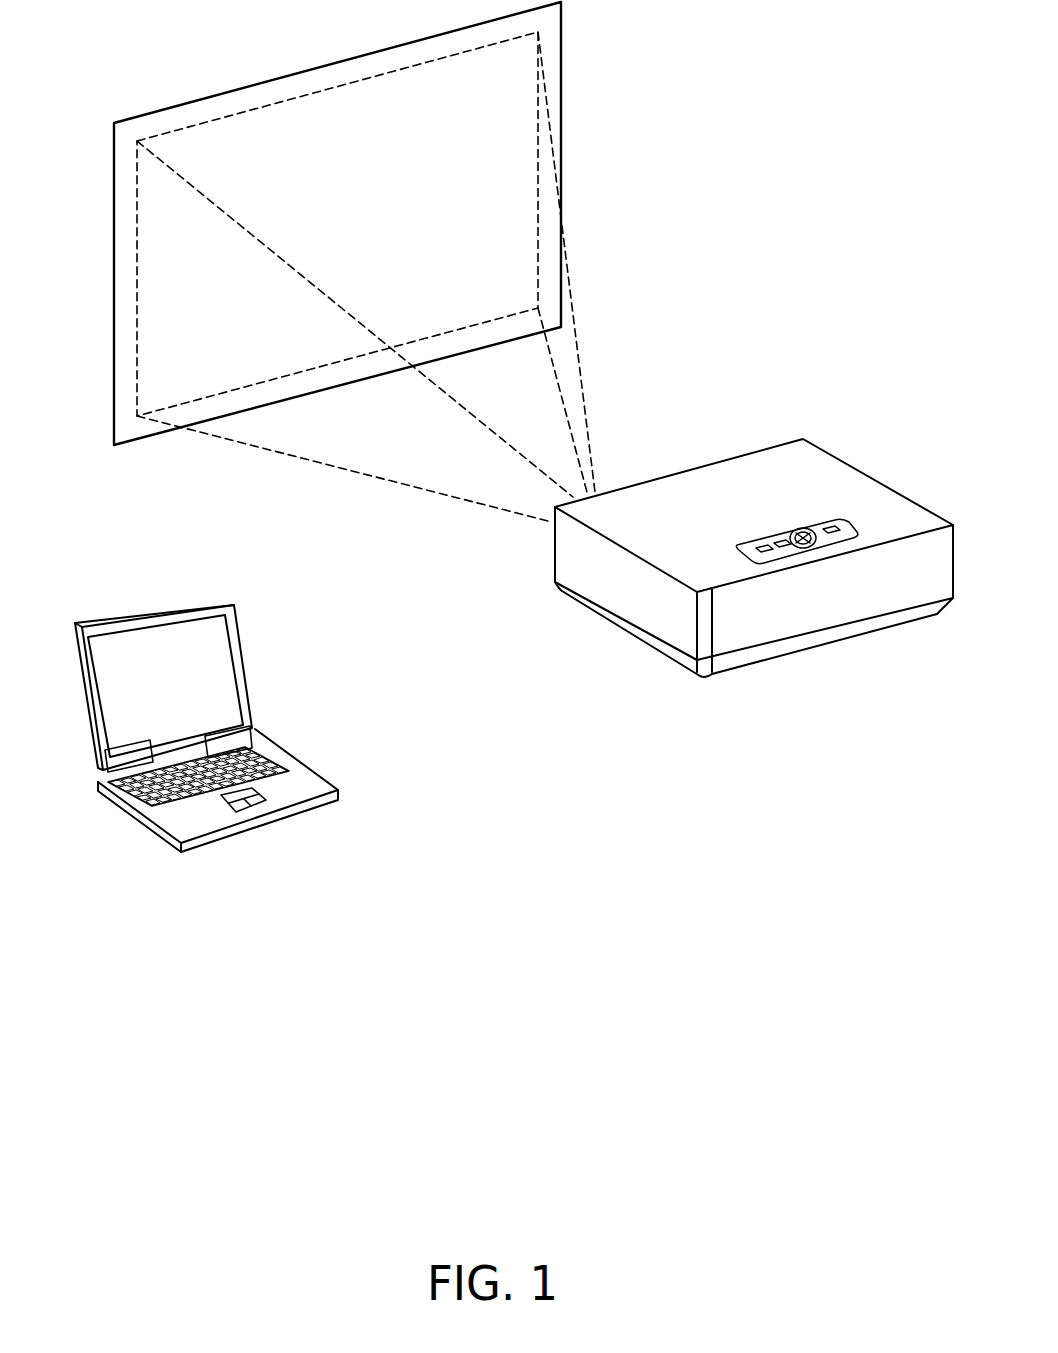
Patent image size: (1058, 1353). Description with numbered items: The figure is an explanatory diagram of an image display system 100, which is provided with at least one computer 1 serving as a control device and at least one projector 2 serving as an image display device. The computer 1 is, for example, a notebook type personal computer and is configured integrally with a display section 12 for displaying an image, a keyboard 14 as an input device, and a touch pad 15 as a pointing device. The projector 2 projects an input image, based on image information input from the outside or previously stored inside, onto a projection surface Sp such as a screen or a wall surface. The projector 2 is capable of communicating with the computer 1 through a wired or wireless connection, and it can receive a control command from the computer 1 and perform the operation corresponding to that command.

The image display system 100 is at (870, 193).
The projection surface Sp is at (125, 222).
The projector 2 is at (866, 438).
The computer 1 is at (246, 604).
The display section 12 is at (182, 608).
The keyboard 14 is at (131, 802).
The touch pad 15 is at (243, 804).